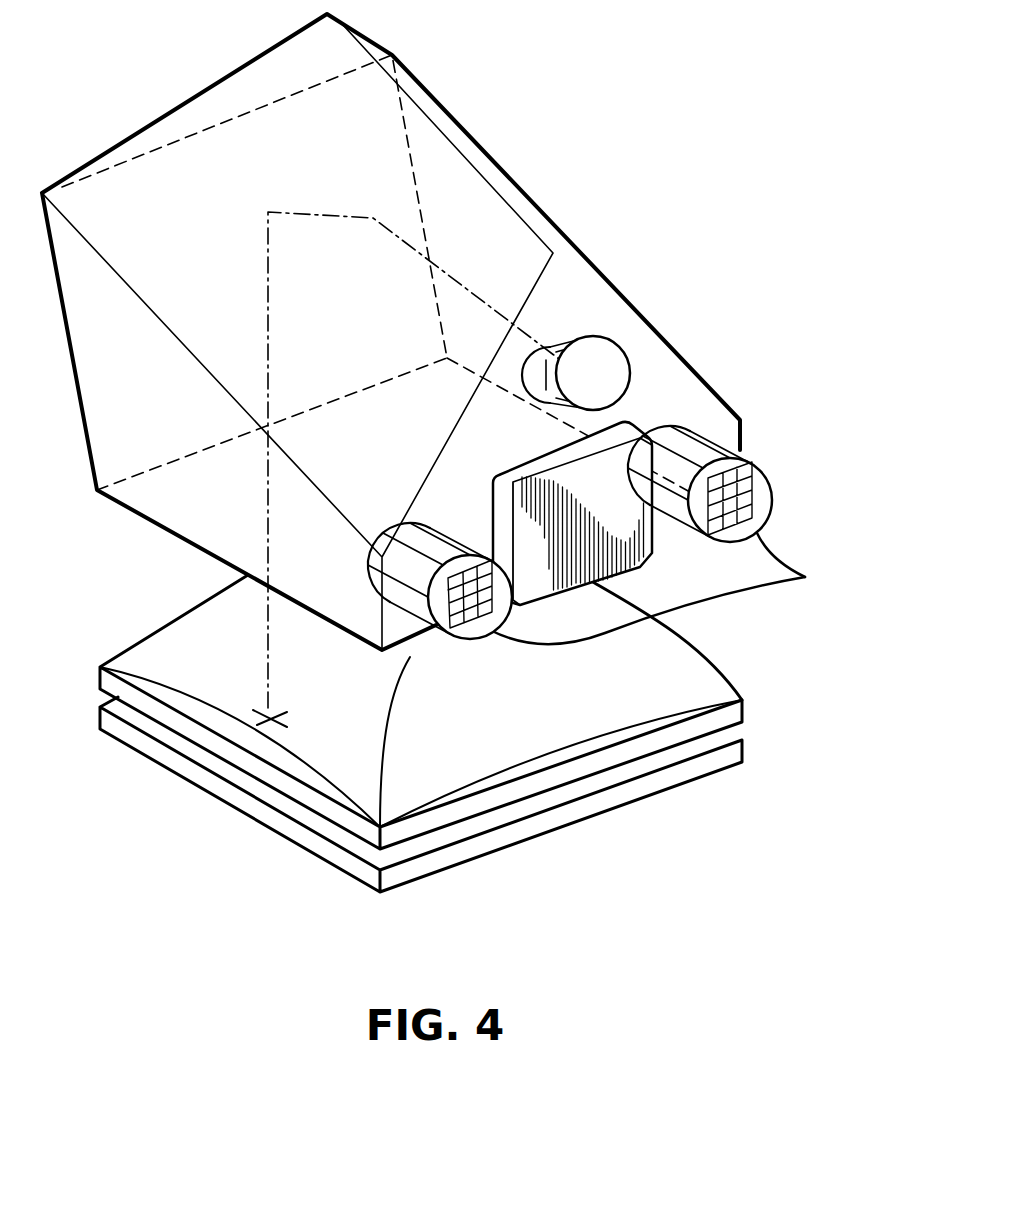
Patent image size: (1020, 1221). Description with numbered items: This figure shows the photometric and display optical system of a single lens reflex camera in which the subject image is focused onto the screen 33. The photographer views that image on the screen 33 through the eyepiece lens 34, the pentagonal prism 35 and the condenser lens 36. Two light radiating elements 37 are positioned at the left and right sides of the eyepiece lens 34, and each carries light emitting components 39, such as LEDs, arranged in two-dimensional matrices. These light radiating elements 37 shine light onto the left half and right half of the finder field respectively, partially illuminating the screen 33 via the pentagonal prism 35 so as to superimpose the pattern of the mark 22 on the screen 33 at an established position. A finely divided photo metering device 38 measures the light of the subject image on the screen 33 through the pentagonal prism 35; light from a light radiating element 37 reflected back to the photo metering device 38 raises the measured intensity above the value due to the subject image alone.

The mark 22 is at (275, 728).
The screen 33 is at (742, 748).
The eyepiece lens 34 is at (640, 420).
The pentagonal prism 35 is at (450, 113).
The condenser lens 36 is at (745, 703).
The light radiating element 37 is at (805, 577).
The finely divided photo metering device 38 is at (610, 345).
The light emitting components 39 is at (765, 472).